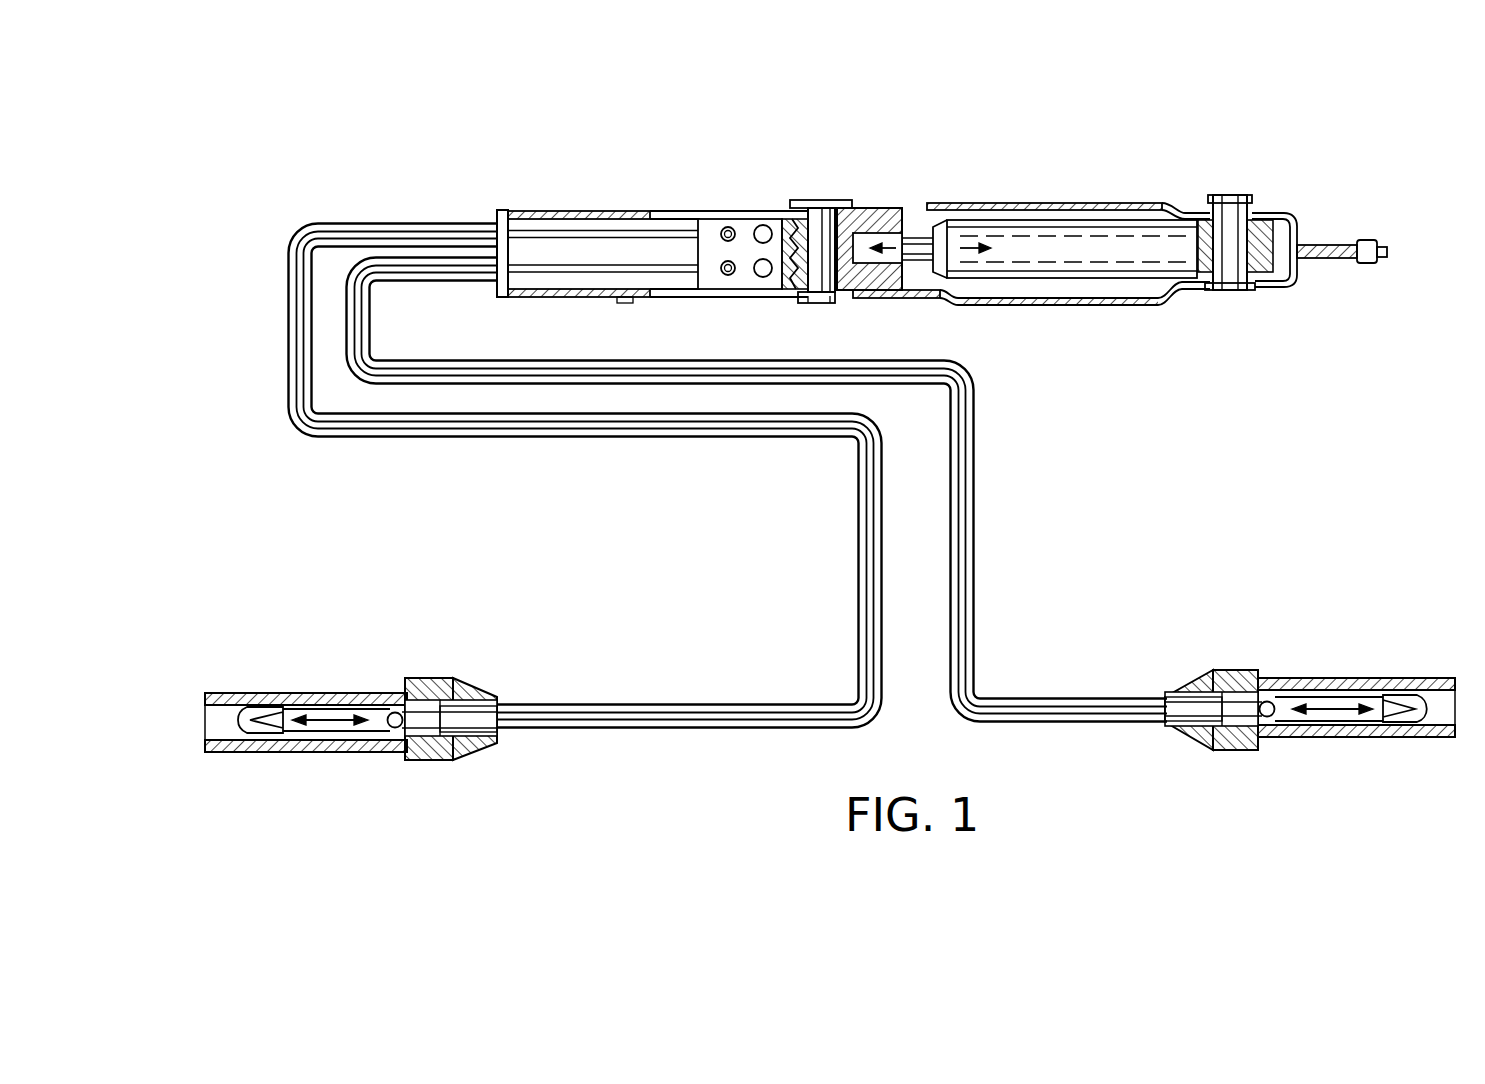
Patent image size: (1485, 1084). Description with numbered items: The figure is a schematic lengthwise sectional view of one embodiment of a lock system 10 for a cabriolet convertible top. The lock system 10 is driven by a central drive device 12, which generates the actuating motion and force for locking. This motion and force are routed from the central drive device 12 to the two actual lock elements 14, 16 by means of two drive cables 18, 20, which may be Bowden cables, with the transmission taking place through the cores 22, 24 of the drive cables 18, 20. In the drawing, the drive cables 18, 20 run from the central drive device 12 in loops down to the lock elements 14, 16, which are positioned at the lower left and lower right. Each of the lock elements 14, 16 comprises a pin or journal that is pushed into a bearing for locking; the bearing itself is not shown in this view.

The lock system 10 is at (432, 147).
The central drive device 12 is at (1072, 198).
The lock element 14 is at (332, 678).
The lock element 16 is at (1338, 670).
The drive cable 18 is at (857, 534).
The drive cable 20 is at (977, 532).
The core 22 is at (869, 596).
The core 24 is at (967, 597).